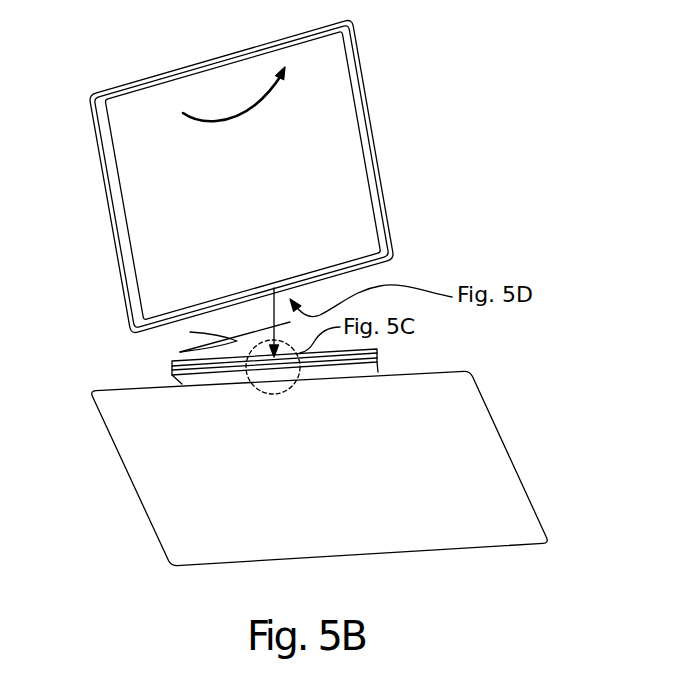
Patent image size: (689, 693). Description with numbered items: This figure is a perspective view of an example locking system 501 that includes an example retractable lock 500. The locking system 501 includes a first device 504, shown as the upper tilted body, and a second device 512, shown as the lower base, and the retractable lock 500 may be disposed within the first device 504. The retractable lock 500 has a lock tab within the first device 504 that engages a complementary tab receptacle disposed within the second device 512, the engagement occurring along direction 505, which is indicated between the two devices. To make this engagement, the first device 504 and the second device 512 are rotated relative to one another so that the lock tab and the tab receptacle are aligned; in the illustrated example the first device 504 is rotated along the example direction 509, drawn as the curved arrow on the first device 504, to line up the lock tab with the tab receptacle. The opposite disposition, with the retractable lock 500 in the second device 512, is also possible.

The retractable lock 500 is at (283, 176).
The locking system 501 is at (282, 298).
The first device 504 is at (388, 211).
The direction 505 is at (180, 352).
The direction 509 is at (242, 119).
The second device 512 is at (167, 520).